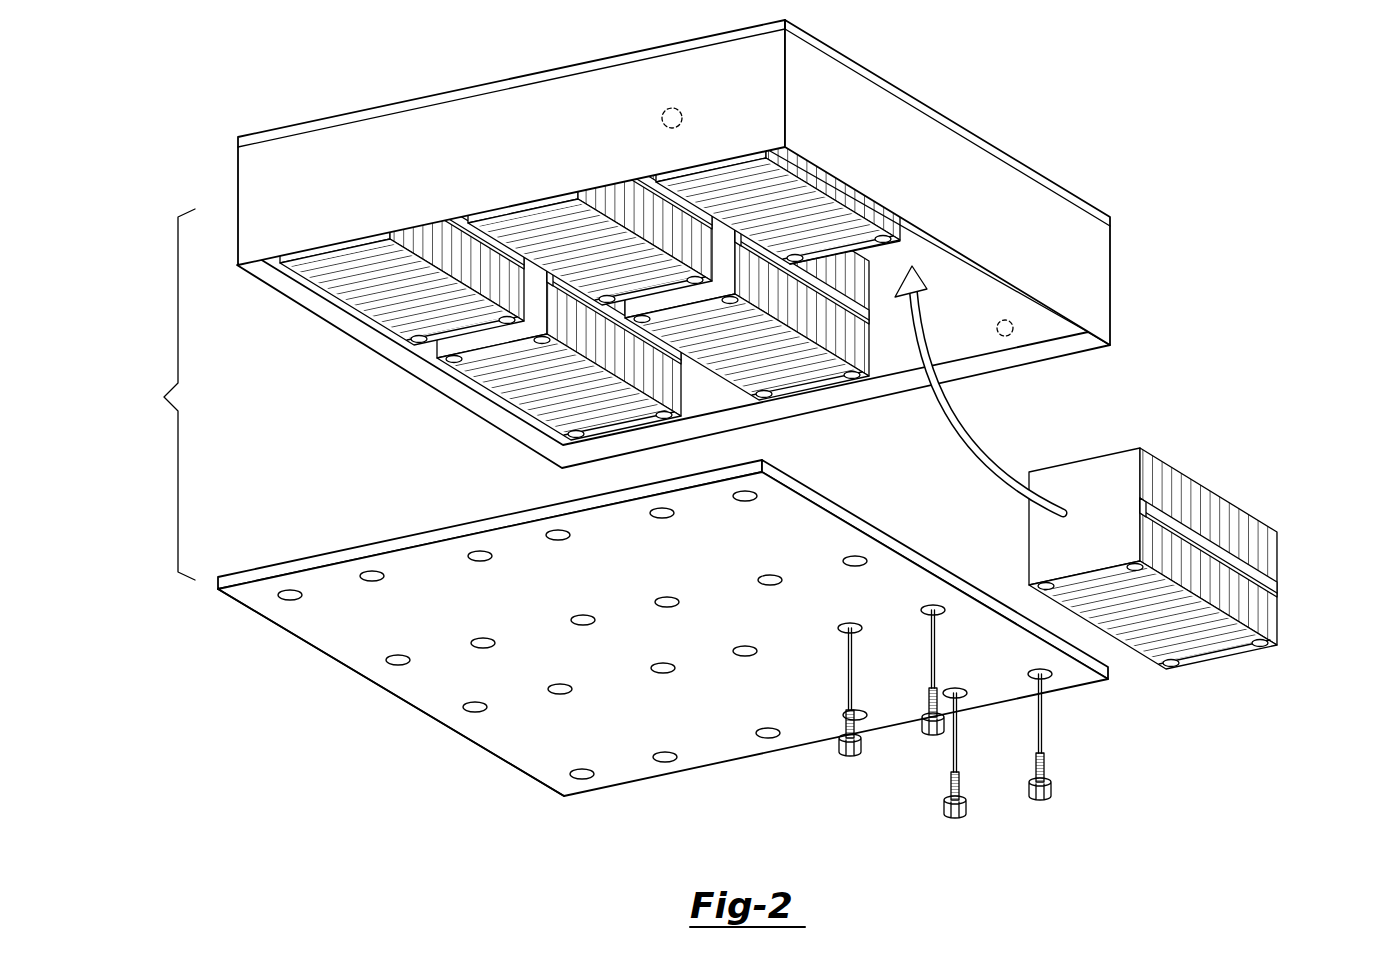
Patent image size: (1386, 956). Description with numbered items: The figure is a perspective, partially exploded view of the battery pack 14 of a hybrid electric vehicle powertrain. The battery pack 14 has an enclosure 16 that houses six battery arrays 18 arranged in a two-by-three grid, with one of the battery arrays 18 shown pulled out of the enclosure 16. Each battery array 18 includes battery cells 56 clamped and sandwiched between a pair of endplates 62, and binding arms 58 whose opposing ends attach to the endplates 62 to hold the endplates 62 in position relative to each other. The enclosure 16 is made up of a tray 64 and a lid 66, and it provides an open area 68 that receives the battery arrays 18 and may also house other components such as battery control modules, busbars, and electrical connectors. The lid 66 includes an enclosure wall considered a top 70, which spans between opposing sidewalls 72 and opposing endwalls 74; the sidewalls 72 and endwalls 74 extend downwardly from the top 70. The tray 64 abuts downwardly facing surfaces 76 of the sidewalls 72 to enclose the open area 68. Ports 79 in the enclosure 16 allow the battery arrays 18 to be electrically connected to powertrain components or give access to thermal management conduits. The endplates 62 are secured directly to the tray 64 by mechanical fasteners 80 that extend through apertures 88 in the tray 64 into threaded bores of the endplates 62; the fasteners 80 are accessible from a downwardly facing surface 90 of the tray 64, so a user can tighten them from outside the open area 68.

The battery pack 14 is at (152, 133).
The enclosure 16 is at (165, 394).
The battery array 18 is at (818, 377).
The battery cells 56 is at (1230, 633).
The binding arms 58 is at (1207, 547).
The endplates 62 is at (1272, 620).
The tray 64 is at (663, 639).
The lid 66 is at (284, 133).
The open area 68 is at (661, 247).
The top 70 is at (362, 110).
The sidewalls 72 is at (900, 137).
The endwalls 74 is at (483, 128).
The surfaces of the sidewalls 76 is at (367, 337).
The ports 79 is at (1005, 337).
The mechanical fasteners 80 is at (1050, 787).
The apertures 88 is at (1030, 676).
The downwardly facing surface 90 is at (303, 622).